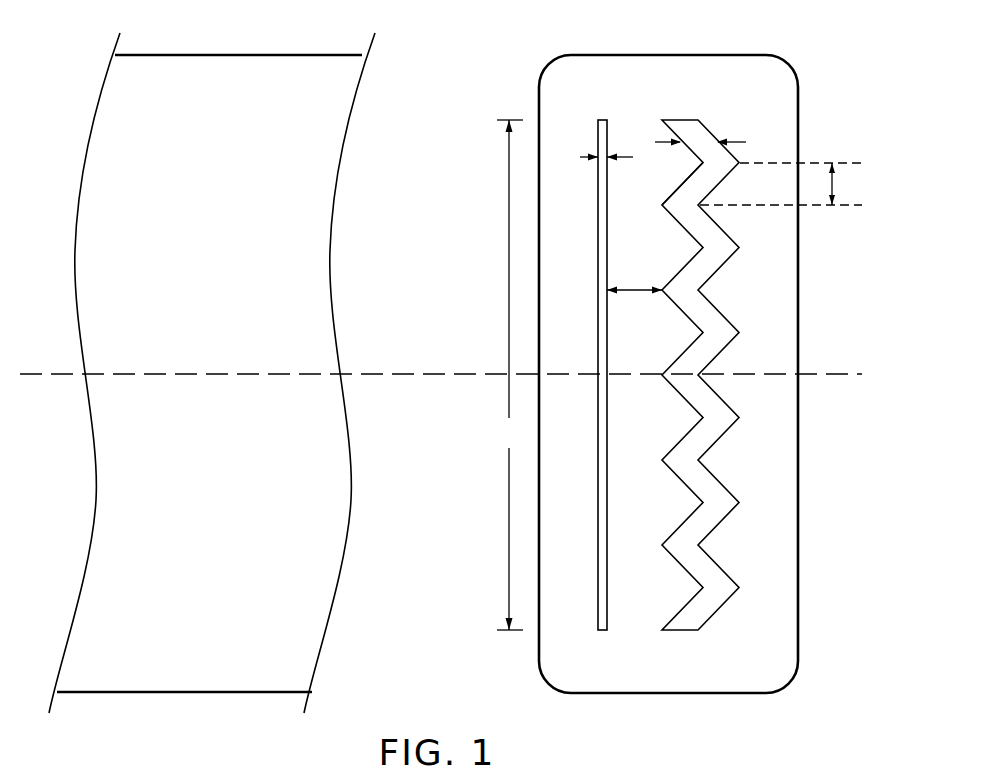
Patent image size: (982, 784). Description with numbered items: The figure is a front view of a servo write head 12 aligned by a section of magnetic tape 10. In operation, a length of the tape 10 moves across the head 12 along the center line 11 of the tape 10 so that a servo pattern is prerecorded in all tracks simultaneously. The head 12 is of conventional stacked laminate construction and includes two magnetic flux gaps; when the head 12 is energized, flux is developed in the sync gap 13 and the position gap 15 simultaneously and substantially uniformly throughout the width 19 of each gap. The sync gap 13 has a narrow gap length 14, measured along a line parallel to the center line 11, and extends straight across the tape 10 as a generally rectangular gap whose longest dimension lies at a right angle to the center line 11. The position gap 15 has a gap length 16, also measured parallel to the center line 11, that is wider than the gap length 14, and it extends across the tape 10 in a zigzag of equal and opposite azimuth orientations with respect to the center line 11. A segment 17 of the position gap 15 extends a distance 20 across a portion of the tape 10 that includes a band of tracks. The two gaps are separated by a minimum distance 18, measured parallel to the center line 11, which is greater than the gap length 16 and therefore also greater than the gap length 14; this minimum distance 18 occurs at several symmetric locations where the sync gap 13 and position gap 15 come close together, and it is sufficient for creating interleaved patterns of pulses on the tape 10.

The magnetic tape 10 is at (234, 55).
The center line 11 is at (234, 373).
The servo write head 12 is at (670, 55).
The sync gap 13 is at (600, 119).
The gap length 14 is at (589, 159).
The position gap 15 is at (680, 119).
The gap length 16 is at (716, 142).
The segment 17 is at (684, 182).
The minimum distance 18 is at (634, 278).
The width 19 is at (509, 375).
The distance 20 is at (836, 184).